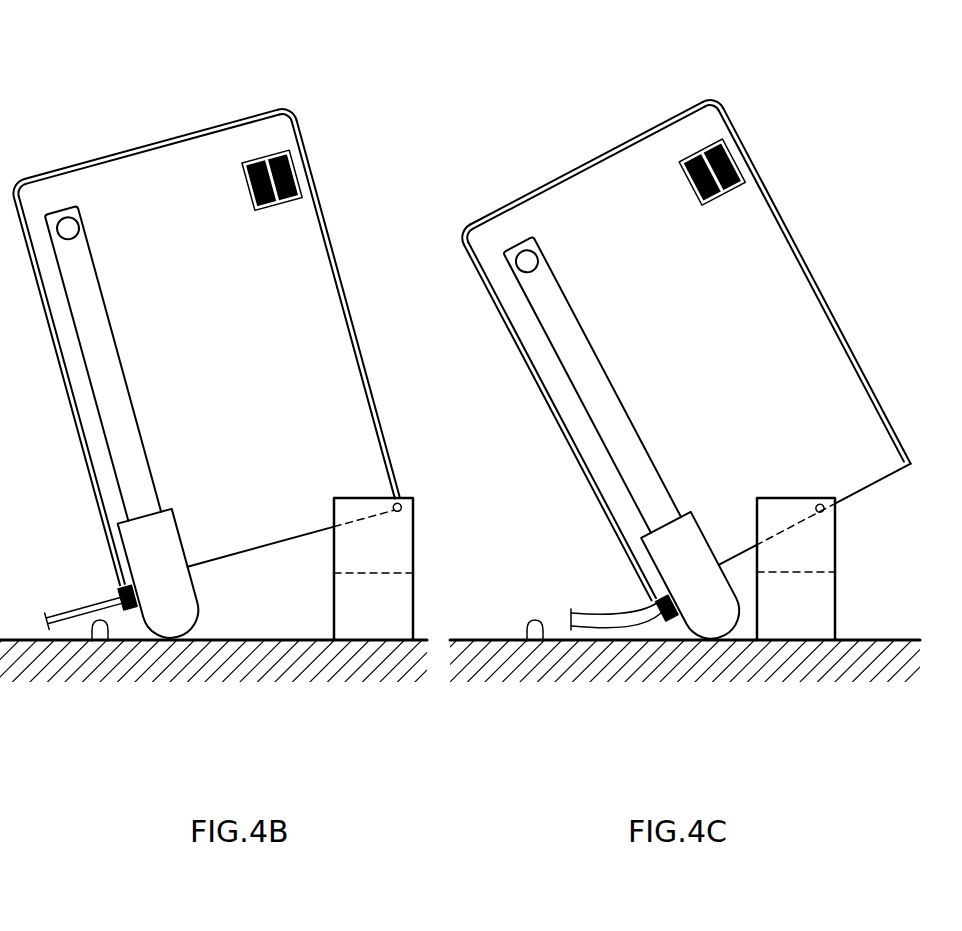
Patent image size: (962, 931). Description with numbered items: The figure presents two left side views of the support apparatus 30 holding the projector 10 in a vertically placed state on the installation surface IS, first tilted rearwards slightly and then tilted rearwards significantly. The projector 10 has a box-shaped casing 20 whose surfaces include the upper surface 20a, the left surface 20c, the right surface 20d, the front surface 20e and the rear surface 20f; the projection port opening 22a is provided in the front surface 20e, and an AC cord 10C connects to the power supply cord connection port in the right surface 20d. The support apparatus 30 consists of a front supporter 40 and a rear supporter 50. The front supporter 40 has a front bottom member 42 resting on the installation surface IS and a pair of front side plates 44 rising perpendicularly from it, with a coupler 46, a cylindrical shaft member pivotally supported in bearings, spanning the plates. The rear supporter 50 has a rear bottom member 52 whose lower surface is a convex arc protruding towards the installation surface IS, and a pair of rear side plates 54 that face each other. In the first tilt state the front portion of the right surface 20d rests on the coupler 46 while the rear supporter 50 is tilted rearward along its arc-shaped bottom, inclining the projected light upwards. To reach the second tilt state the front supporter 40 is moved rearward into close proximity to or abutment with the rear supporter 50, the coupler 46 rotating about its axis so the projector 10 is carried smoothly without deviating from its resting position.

In FIG. 4B, the projector 10 is at (213, 337).
In FIG. 4C, the projector 10 is at (686, 334).
In FIG. 4B, the AC cord 10C is at (88, 600).
In FIG. 4C, the AC cord 10C is at (633, 617).
In FIG. 4B, the casing 20 is at (282, 112).
In FIG. 4C, the casing 20 is at (708, 97).
In FIG. 4B, the upper surface 20a is at (160, 327).
In FIG. 4C, the upper surface 20a is at (636, 325).
In FIG. 4B, the left surface 20c is at (139, 145).
In FIG. 4C, the left surface 20c is at (600, 150).
In FIG. 4B, the right surface 20d is at (258, 560).
In FIG. 4C, the right surface 20d is at (868, 490).
In FIG. 4B, the front surface 20e is at (348, 298).
In FIG. 4C, the front surface 20e is at (822, 282).
In FIG. 4B, the rear surface 20f is at (70, 410).
In FIG. 4C, the rear surface 20f is at (551, 410).
In FIG. 4B, the projection port opening 22a is at (318, 162).
In FIG. 4C, the projection port opening 22a is at (757, 150).
In FIG. 4B, the support apparatus 30 is at (240, 493).
In FIG. 4C, the support apparatus 30 is at (704, 507).
In FIG. 4B, the front supporter 40 is at (240, 616).
In FIG. 4C, the front supporter 40 is at (831, 630).
In FIG. 4B, the front bottom member 42 is at (358, 610).
In FIG. 4C, the front bottom member 42 is at (800, 608).
In FIG. 4B, the front side plates 44 is at (378, 543).
In FIG. 4C, the front side plates 44 is at (800, 543).
In FIG. 4B, the coupler 46 is at (404, 511).
In FIG. 4C, the coupler 46 is at (832, 524).
In FIG. 4B, the rear supporter 50 is at (119, 485).
In FIG. 4C, the rear supporter 50 is at (627, 500).
In FIG. 4B, the rear bottom member 52 is at (175, 613).
In FIG. 4C, the rear bottom member 52 is at (713, 613).
In FIG. 4B, the rear side plates 54 is at (147, 535).
In FIG. 4C, the rear side plates 54 is at (672, 543).
In FIG. 4B, the installation surface IS is at (90, 643).
In FIG. 4C, the installation surface IS is at (525, 645).